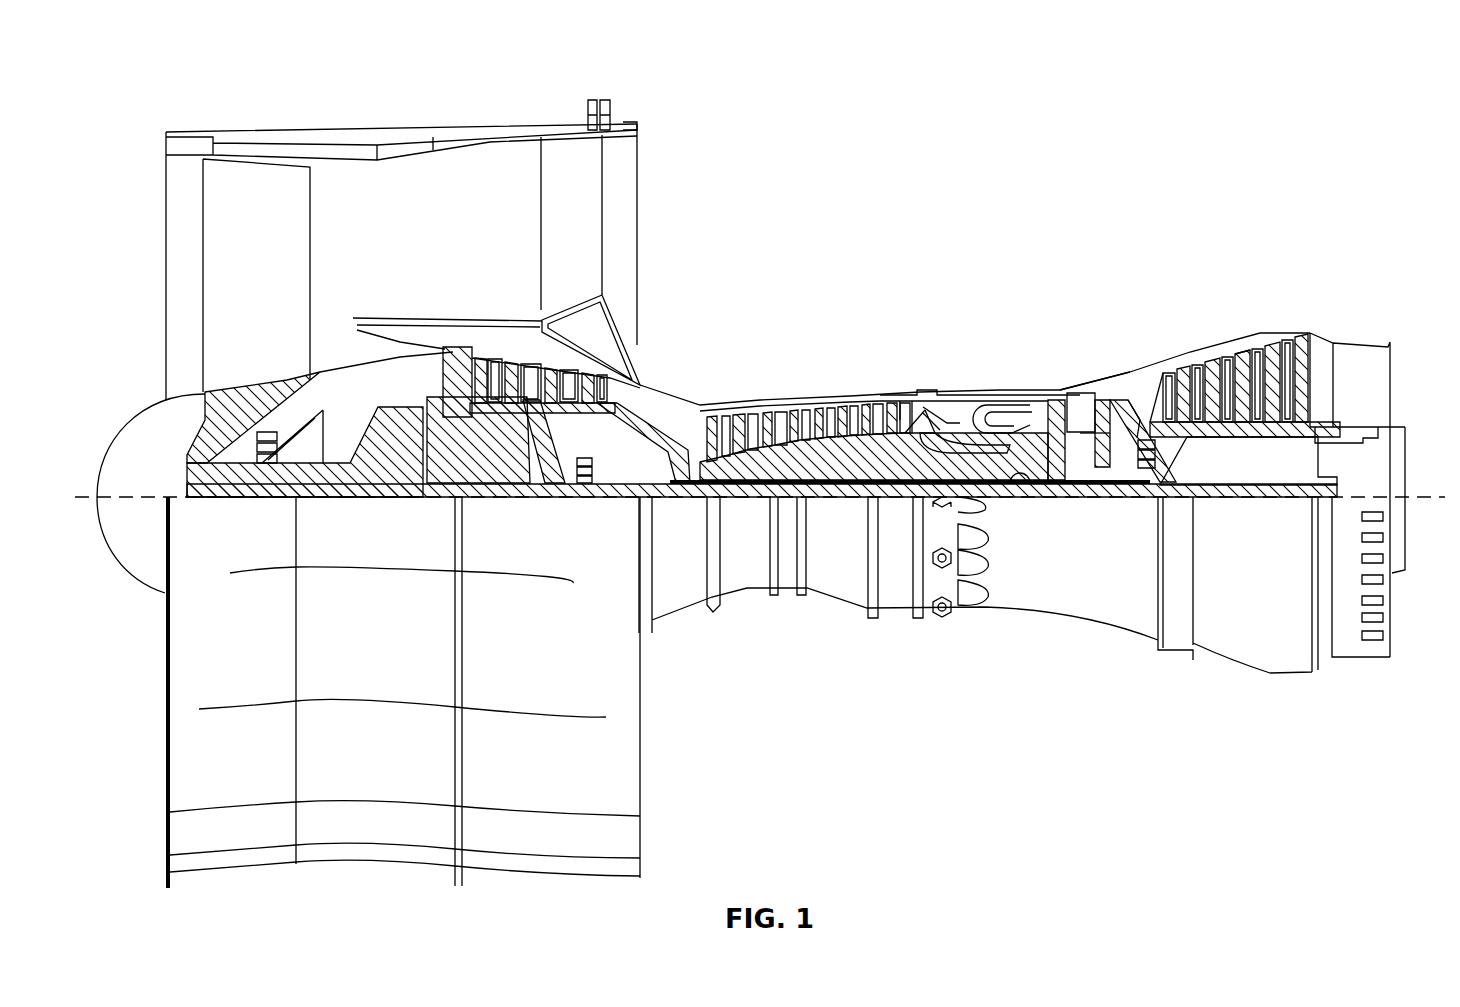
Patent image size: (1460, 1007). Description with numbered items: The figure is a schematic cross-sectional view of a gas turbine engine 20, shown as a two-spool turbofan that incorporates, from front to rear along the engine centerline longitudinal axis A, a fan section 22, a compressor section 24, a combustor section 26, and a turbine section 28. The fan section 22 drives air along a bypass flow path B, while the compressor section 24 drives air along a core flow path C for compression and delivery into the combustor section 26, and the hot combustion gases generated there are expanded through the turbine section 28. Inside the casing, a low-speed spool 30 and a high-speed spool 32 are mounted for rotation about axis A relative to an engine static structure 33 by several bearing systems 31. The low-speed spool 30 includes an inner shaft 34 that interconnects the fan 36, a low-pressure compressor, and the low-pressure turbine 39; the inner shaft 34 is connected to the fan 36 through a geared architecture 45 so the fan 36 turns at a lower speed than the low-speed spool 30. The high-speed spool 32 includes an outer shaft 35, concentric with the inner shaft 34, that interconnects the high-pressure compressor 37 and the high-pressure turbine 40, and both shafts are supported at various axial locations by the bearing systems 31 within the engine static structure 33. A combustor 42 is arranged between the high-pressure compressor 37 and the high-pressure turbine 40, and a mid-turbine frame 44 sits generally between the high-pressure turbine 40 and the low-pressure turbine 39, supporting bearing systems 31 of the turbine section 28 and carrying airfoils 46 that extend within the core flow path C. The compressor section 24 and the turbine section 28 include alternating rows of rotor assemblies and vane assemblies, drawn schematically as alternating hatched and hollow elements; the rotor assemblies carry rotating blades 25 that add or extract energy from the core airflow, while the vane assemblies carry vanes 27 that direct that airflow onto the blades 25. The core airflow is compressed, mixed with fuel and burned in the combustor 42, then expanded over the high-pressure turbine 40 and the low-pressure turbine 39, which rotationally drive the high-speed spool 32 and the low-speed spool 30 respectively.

The gas turbine engine 20 is at (1211, 167).
The fan section 22 is at (427, 100).
The compressor section 24 is at (880, 330).
The blades 25 is at (478, 370).
The combustor section 26 is at (1067, 284).
The vanes 27 is at (510, 378).
The turbine section 28 is at (1283, 247).
The low-speed spool 30 is at (856, 506).
The bearing systems 31 is at (267, 458).
The high-speed spool 32 is at (915, 430).
The engine static structure 33 is at (897, 618).
The inner shaft 34 is at (652, 490).
The outer shaft 35 is at (1025, 473).
The fan 36 is at (283, 260).
The high-pressure compressor 37 is at (798, 420).
The low-pressure turbine 39 is at (1245, 350).
The high-pressure turbine 40 is at (1082, 393).
The combustor 42 is at (1002, 416).
The mid-turbine frame 44 is at (1120, 407).
The geared architecture 45 is at (403, 463).
The airfoils 46 is at (1118, 382).